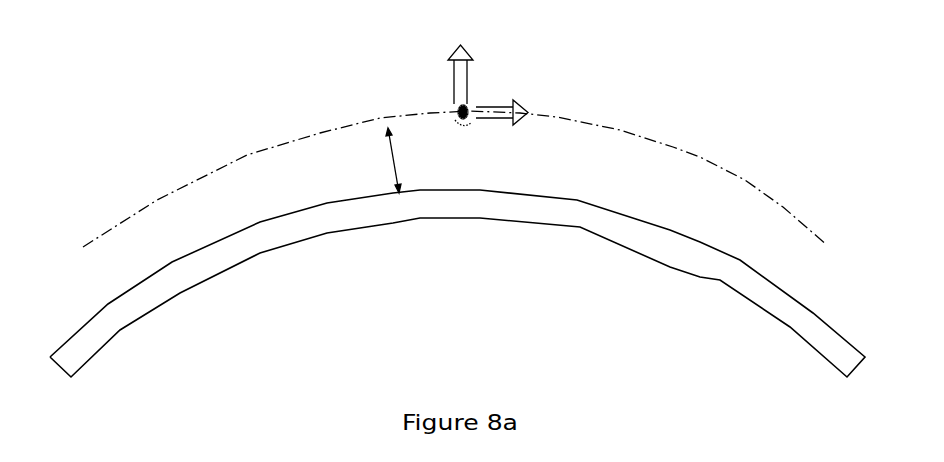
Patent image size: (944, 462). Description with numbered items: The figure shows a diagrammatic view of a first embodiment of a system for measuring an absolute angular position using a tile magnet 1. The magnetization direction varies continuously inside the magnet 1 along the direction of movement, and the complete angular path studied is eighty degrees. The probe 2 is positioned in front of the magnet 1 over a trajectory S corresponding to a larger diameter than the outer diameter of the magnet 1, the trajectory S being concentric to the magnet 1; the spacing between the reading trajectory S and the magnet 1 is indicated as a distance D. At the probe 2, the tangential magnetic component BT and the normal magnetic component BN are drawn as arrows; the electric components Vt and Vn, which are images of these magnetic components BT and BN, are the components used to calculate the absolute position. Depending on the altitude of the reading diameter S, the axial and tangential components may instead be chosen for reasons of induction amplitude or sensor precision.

The magnet 1 is at (672, 234).
The probe 2 is at (443, 110).
The trajectory S is at (455, 179).
The distance between sensor path and structure D is at (383, 160).
The normal magnetic component BN is at (472, 74).
The tangential magnetic component BT is at (516, 117).